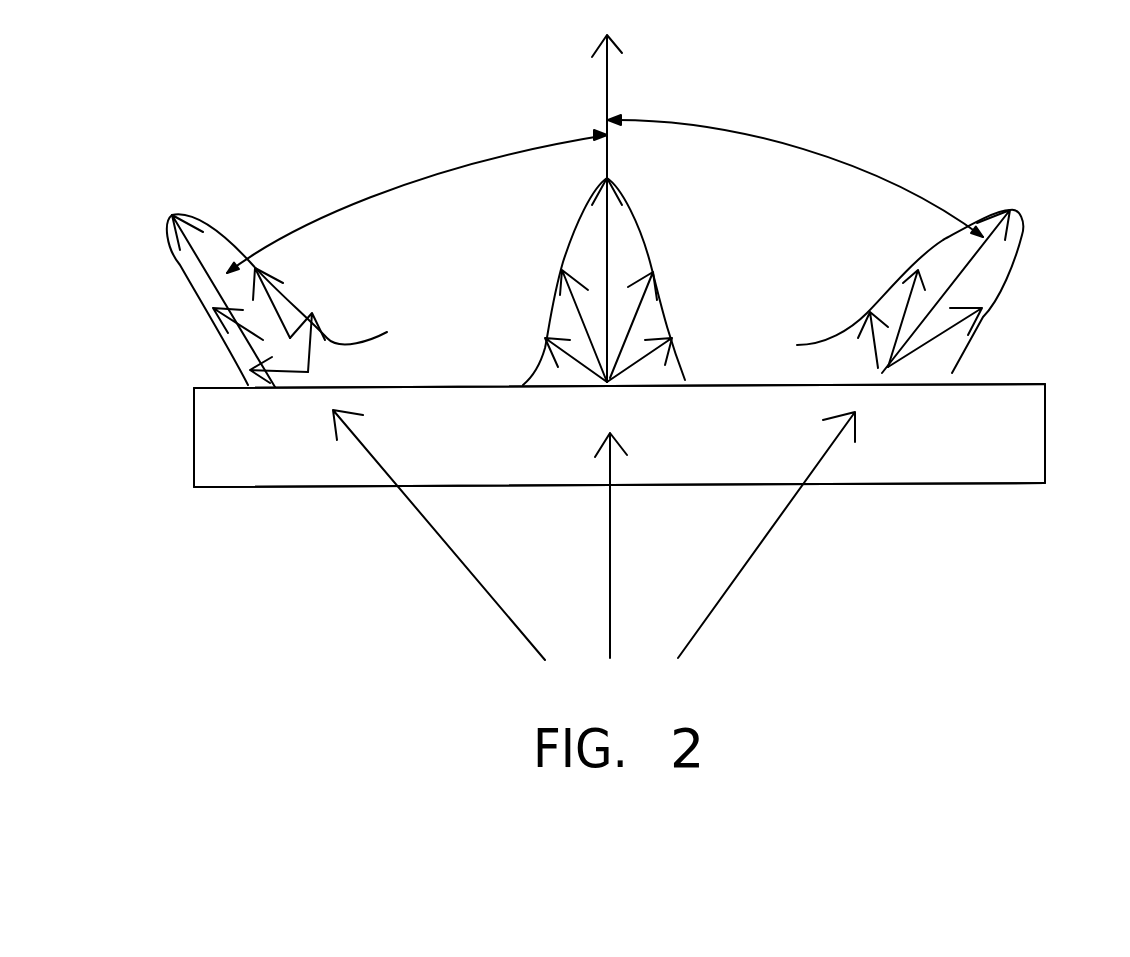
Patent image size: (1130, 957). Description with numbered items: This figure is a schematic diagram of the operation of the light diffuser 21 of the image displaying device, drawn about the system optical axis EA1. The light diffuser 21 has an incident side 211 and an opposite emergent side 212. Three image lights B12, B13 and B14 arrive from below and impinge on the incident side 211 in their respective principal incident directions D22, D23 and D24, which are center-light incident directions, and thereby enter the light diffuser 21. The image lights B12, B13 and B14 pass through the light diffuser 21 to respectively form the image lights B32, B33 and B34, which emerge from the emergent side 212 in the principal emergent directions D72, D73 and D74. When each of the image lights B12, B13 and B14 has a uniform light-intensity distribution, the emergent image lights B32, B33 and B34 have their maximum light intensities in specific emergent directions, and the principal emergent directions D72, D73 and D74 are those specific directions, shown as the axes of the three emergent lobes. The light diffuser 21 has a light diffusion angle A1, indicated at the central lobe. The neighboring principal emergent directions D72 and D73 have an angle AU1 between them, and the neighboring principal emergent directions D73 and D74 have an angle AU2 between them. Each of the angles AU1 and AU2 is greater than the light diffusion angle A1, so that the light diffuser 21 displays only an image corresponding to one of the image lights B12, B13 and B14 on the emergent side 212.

The light diffuser 21 is at (233, 460).
The incident side 211 is at (903, 487).
The emergent side 212 is at (443, 385).
The image light B12 is at (775, 525).
The image light B13 is at (610, 550).
The image light B14 is at (425, 527).
The principal incident direction D22 is at (766, 535).
The principal incident direction D23 is at (628, 545).
The principal incident direction D24 is at (439, 535).
The image light B32 is at (987, 272).
The image light B33 is at (628, 253).
The image light B34 is at (202, 278).
The principal emergent direction D72 is at (966, 264).
The principal emergent direction D73 is at (607, 258).
The principal emergent direction D74 is at (208, 257).
The optical axis EA1 is at (622, 106).
The angle AU1 is at (795, 172).
The angle AU2 is at (417, 200).
The light diffusion angle A1 is at (651, 200).